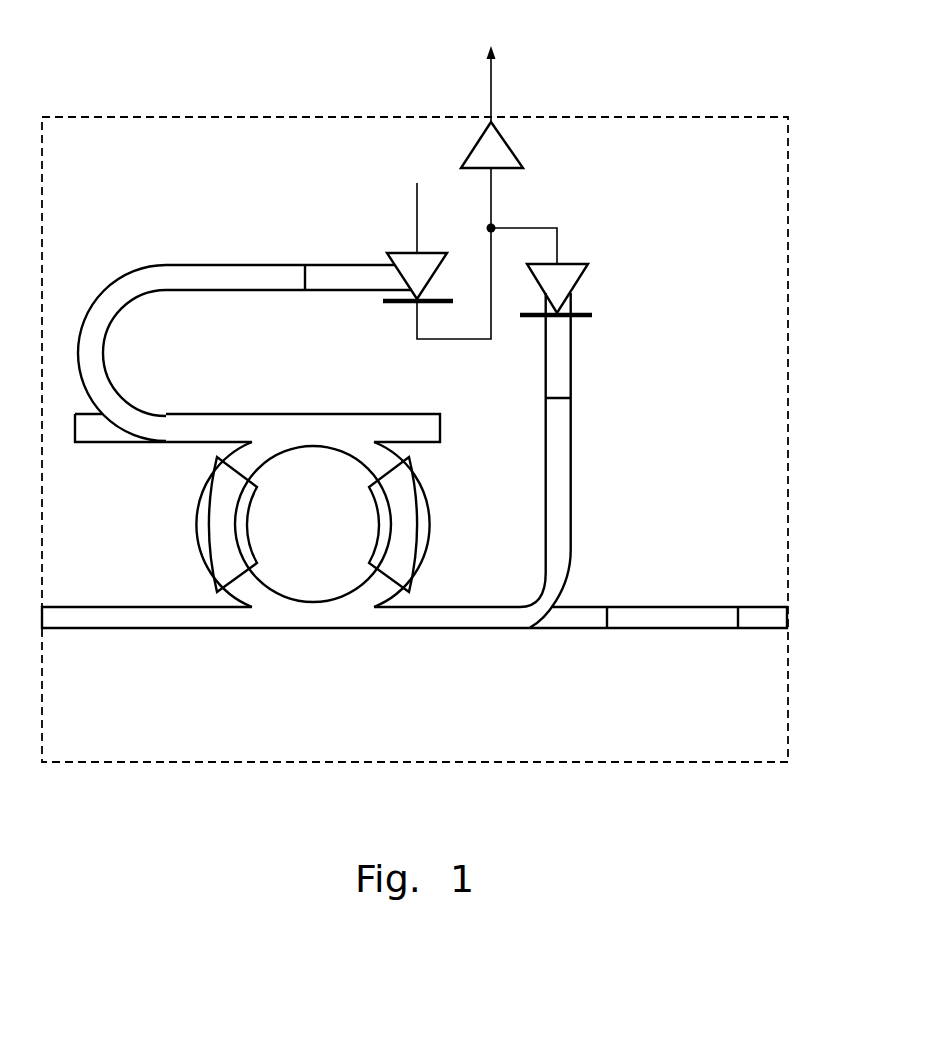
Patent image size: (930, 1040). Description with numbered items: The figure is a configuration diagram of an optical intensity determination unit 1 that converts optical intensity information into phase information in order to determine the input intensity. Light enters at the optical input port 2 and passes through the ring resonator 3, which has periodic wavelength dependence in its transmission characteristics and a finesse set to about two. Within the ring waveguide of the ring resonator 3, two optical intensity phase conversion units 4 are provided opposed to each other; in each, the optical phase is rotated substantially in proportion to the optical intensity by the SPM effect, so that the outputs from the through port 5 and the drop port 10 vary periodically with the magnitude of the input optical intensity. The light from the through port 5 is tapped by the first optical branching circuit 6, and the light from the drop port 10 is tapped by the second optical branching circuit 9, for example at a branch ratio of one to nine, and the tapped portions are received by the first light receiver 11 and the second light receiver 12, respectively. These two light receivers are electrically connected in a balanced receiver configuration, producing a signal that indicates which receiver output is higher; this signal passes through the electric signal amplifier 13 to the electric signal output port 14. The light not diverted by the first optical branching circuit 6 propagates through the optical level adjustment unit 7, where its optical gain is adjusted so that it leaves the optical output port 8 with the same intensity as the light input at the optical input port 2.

The optical intensity determination unit 1 is at (776, 114).
The optical input port 2 is at (67, 624).
The ring resonator 3 is at (312, 583).
The optical intensity phase conversion unit 4 is at (237, 527).
The through port 5 is at (448, 621).
The first optical branching circuit 6 is at (532, 616).
The optical level adjustment unit 7 is at (657, 629).
The optical output port 8 is at (765, 629).
The second optical branching circuit 9 is at (137, 425).
The drop port 10 is at (218, 423).
The first light receiver 11 is at (567, 345).
The second light receiver 12 is at (350, 273).
The electric signal amplifier 13 is at (523, 168).
The electric signal output port 14 is at (490, 64).